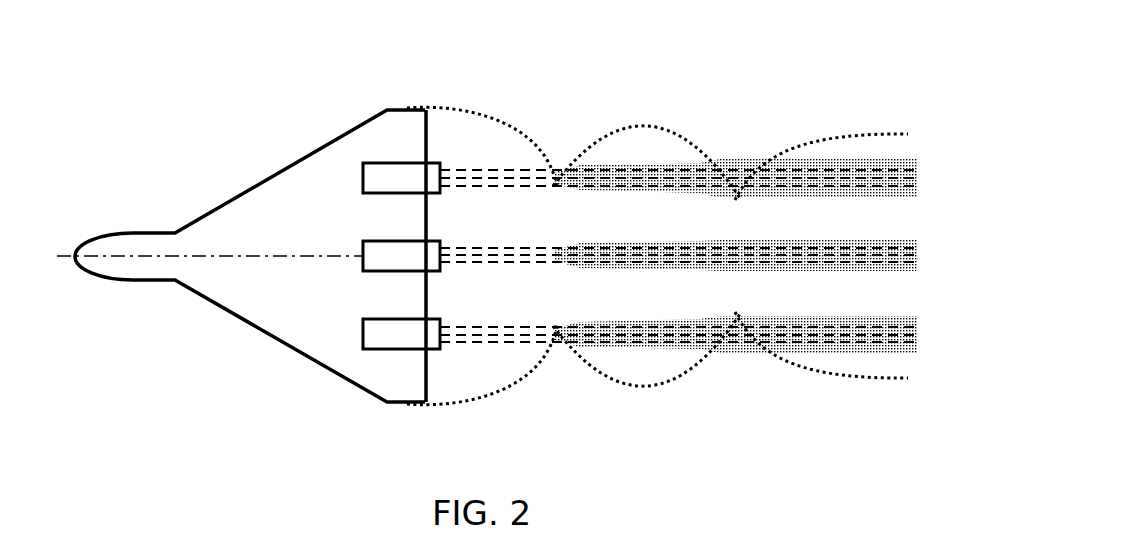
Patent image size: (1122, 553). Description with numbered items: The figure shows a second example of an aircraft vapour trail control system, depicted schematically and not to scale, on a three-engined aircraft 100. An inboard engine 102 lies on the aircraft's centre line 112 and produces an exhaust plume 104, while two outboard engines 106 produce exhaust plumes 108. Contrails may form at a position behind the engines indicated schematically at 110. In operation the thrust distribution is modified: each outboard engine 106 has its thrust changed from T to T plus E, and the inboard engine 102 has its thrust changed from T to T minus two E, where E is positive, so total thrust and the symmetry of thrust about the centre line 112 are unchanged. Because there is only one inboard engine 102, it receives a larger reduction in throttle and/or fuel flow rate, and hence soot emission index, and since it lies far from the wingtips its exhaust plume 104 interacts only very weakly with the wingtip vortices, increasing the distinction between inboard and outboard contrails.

The three-engined aircraft 100 is at (165, 101).
The inboard engine 102 is at (362, 262).
The exhaust plume 104 is at (497, 263).
The outboard engines 106 is at (362, 177).
The exhaust plumes 108 is at (487, 178).
The contrail formation position 110 is at (650, 180).
The centre line 112 is at (65, 255).